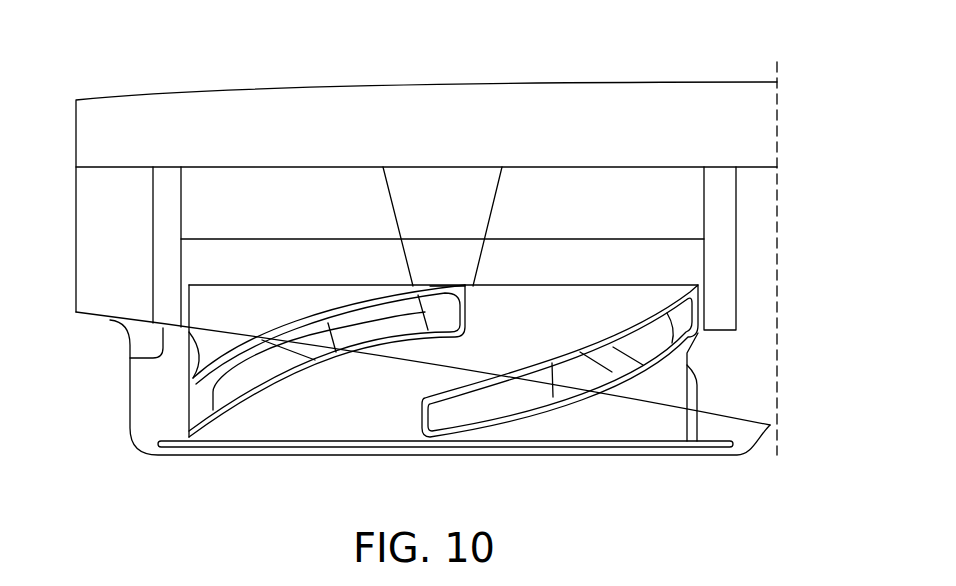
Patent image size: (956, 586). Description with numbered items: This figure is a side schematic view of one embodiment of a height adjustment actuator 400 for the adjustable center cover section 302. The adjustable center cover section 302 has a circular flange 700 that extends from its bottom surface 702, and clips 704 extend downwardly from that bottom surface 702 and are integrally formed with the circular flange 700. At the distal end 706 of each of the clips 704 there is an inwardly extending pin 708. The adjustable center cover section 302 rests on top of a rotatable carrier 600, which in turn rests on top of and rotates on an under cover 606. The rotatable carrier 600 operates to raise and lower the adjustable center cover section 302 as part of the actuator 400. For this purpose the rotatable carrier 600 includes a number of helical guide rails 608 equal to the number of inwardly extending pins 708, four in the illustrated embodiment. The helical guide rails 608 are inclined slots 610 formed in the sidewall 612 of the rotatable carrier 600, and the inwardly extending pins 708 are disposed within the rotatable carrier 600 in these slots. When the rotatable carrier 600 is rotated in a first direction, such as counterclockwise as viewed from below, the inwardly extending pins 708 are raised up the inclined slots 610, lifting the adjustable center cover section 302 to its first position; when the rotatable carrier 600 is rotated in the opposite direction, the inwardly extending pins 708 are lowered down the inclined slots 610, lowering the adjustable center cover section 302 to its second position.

The adjustable center cover section 302 is at (765, 122).
The actuator 400 is at (155, 480).
The rotatable carrier 600 is at (672, 393).
The under cover 606 is at (142, 405).
The helical guide rails 608 is at (360, 323).
The inclined slots 610 is at (272, 372).
The sidewall 612 is at (331, 405).
The circular flange 700 is at (667, 210).
The bottom surface 702 is at (105, 168).
The clips 704 is at (160, 217).
The distal end 706 is at (132, 356).
The inwardly extending pins 708 is at (695, 303).